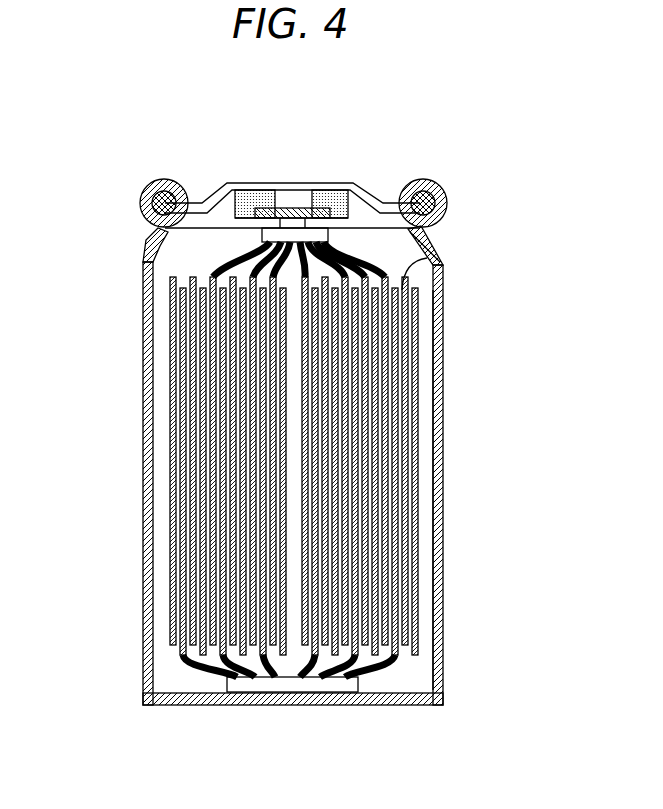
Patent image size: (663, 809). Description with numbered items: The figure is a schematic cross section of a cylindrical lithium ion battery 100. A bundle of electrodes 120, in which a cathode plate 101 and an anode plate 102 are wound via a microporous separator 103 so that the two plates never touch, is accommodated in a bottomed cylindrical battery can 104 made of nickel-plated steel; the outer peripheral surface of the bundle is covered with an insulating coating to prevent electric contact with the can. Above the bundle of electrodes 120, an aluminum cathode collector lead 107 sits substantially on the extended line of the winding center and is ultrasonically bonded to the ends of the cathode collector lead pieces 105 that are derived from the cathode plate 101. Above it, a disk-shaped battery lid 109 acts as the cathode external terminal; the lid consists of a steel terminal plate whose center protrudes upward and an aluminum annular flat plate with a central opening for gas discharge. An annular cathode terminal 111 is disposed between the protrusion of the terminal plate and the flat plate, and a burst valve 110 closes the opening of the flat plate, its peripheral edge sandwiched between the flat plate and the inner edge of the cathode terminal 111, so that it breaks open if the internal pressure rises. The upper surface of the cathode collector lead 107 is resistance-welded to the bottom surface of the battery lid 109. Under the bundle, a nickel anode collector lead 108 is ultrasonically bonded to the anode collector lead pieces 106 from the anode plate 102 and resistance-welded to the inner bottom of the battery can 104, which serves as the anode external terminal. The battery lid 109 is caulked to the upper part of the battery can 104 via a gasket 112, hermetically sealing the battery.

The lithium ion battery 100 is at (455, 152).
The cathode plate 101 is at (385, 645).
The anode plate 102 is at (443, 268).
The separator 103 is at (413, 486).
The battery can 104 is at (198, 705).
The cathode collector lead pieces 105 is at (372, 263).
The anode collector lead pieces 106 is at (193, 662).
The cathode collector lead 107 is at (262, 237).
The anode collector lead 108 is at (297, 684).
The battery lid 109 is at (365, 188).
The burst valve 110 is at (292, 208).
The cathode terminal 111 is at (258, 190).
The gasket 112 is at (142, 203).
The bundle of electrodes 120 is at (420, 399).